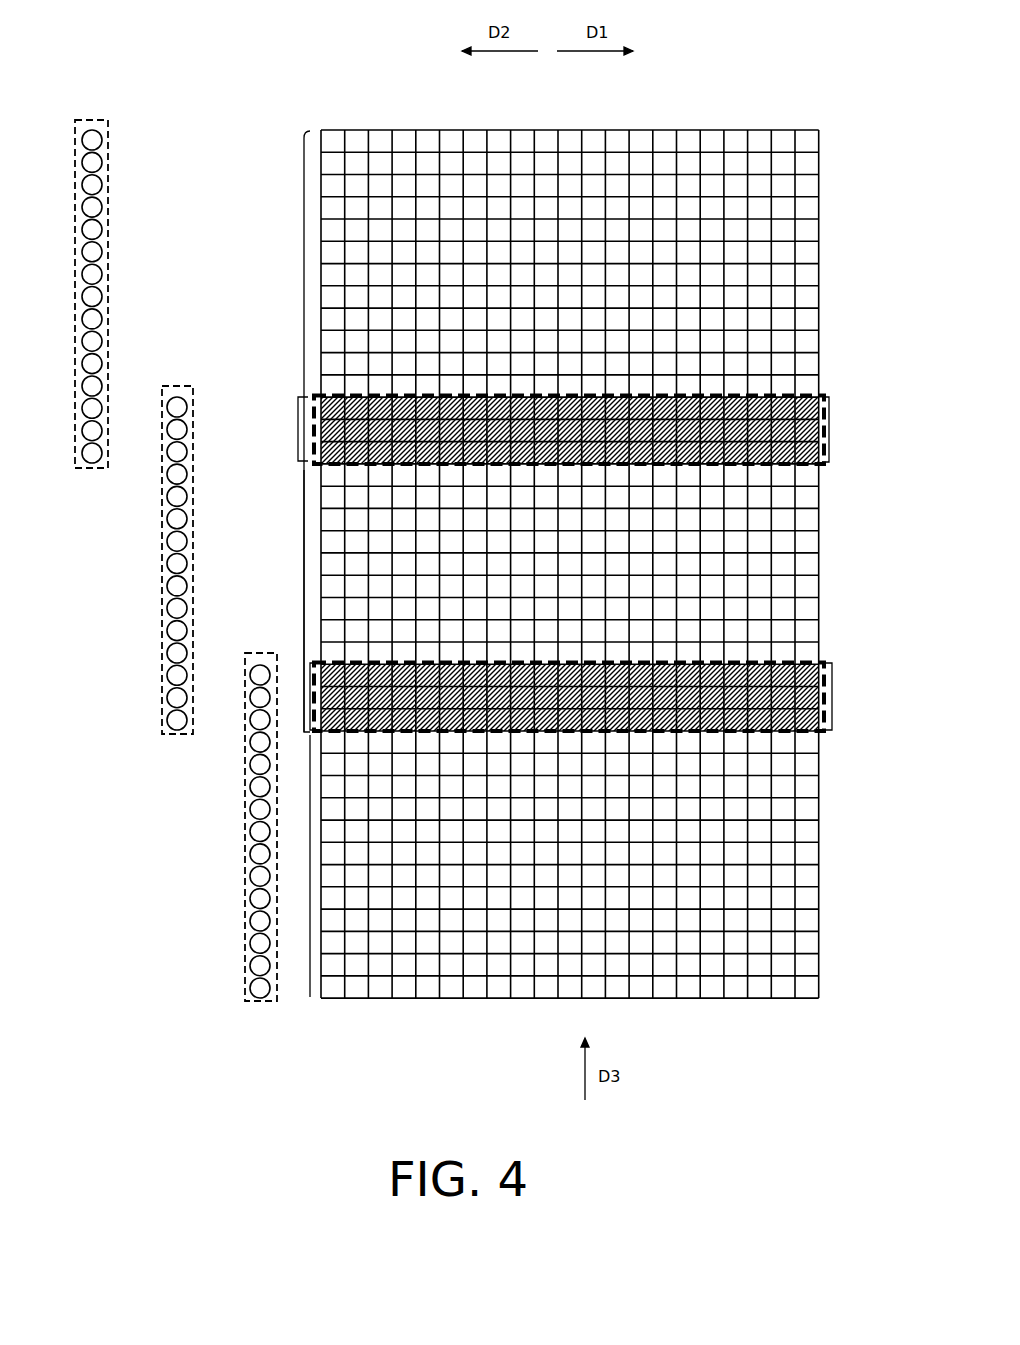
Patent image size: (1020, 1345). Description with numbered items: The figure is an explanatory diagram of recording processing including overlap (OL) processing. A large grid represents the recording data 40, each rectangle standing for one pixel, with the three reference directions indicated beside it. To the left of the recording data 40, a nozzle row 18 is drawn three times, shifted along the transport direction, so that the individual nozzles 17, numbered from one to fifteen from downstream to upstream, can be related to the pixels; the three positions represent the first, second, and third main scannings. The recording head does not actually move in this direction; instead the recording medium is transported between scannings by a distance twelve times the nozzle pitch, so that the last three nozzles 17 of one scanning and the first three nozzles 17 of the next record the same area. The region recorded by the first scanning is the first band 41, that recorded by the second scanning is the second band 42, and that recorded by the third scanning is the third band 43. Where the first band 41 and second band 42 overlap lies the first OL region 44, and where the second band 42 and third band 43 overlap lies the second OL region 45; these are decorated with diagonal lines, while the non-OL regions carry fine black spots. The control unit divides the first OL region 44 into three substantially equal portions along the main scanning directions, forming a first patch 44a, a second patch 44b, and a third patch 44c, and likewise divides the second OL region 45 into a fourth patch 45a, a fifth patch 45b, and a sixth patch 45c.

The nozzle 17 is at (105, 163).
The nozzle row 18 is at (92, 470).
The recording data 40 is at (704, 130).
The first band 41 is at (304, 300).
The second band 42 is at (304, 565).
The third band 43 is at (310, 830).
The first OL region 44 is at (531, 343).
The first patch 44a is at (322, 397).
The second patch 44b is at (535, 397).
The third patch 44c is at (725, 397).
The second OL region 45 is at (555, 603).
The fourth patch 45a is at (400, 664).
The fifth patch 45b is at (560, 664).
The sixth patch 45c is at (795, 664).